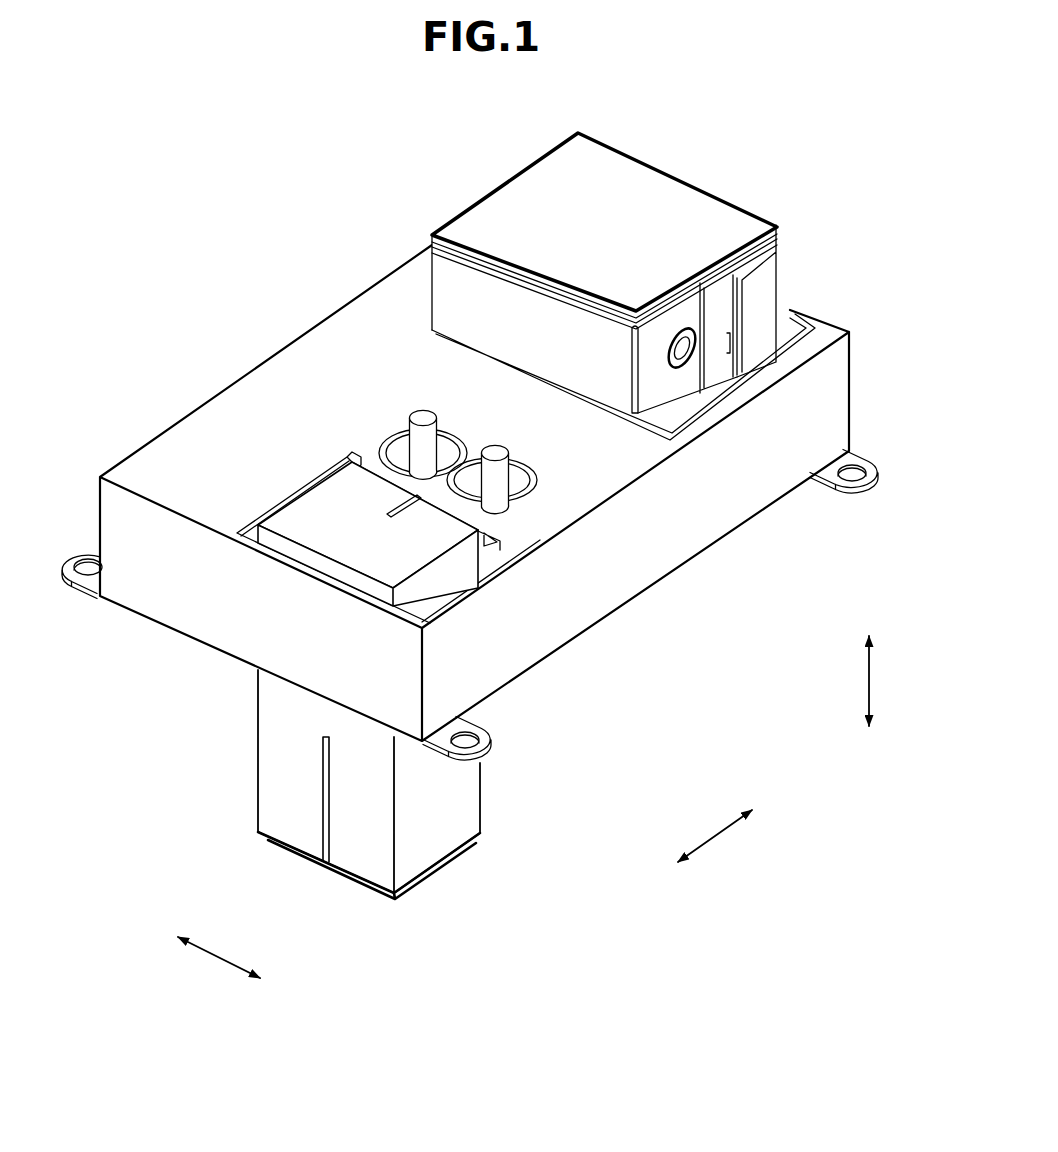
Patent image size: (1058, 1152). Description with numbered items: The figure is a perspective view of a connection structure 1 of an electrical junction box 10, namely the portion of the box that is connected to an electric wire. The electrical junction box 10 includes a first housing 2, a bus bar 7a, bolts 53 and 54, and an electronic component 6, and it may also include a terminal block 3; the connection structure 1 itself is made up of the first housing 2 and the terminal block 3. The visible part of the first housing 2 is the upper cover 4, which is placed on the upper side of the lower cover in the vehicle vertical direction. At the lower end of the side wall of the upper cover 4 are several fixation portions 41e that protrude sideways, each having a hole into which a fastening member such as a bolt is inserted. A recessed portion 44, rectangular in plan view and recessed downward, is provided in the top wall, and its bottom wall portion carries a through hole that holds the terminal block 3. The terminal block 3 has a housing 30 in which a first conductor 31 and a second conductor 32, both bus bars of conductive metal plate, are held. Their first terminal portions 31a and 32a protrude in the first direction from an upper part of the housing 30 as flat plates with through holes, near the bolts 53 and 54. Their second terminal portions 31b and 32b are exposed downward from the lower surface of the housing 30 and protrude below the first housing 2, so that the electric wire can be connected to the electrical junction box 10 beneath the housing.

The connection structure 1 is at (342, 187).
The first housing 2 is at (349, 318).
The terminal block 3 is at (315, 500).
The upper cover 4 is at (220, 424).
The electronic component 6 is at (654, 190).
The bus bar 7a is at (758, 284).
The electrical junction box 10 is at (413, 230).
The housing 30 is at (277, 759).
The first conductor 31 is at (506, 492).
The first terminal portion 31a is at (533, 477).
The second terminal portion 31b is at (370, 895).
The second conductor 32 is at (315, 503).
The first terminal portion 32a is at (443, 462).
The second terminal portion 32b is at (293, 855).
The fixation portion 41e is at (70, 588).
The recessed portion 44 is at (242, 531).
The bolt 53 is at (493, 450).
The bolt 54 is at (408, 476).